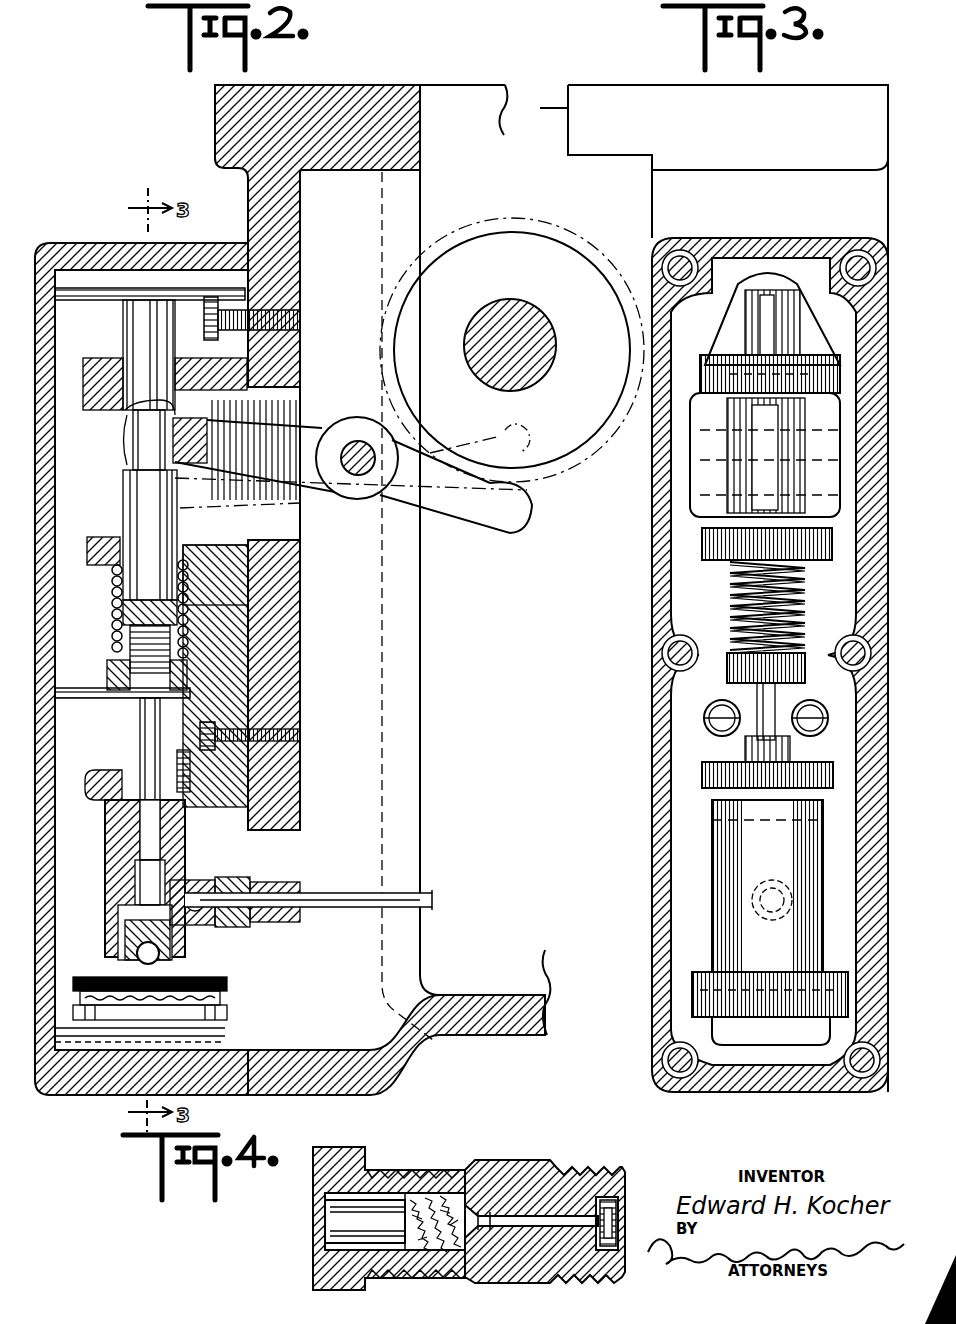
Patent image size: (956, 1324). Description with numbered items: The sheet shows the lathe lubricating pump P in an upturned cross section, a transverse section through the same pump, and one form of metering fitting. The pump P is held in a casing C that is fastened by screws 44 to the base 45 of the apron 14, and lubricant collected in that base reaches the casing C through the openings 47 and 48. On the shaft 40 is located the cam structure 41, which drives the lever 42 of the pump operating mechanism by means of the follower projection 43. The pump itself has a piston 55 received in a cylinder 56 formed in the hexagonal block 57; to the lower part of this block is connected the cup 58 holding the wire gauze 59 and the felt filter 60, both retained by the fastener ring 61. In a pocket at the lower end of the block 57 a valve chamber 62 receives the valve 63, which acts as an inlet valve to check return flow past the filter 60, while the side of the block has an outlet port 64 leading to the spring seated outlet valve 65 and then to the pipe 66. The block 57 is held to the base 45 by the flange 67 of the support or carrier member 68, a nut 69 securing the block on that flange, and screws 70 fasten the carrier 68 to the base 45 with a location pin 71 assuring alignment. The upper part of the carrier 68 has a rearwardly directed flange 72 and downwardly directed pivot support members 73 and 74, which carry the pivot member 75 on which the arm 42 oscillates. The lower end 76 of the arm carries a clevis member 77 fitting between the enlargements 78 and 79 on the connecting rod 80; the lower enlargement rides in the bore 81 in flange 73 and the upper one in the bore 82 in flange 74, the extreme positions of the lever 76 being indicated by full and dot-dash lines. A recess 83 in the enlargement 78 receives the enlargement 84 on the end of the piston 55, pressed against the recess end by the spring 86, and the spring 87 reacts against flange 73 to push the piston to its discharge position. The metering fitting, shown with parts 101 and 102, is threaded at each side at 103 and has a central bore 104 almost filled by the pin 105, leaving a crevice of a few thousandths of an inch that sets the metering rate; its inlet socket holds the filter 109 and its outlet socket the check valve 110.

In FIG. 2, the apron 14 is at (362, 92).
In FIG. 3, the apron 14 is at (618, 96).
In FIG. 2, the shaft 40 is at (516, 318).
In FIG. 2, the cam structure 41 is at (560, 452).
In FIG. 2, the lever 42 is at (462, 508).
In FIG. 2, the follower projection 43 is at (516, 500).
In FIG. 2, the screws 44 is at (300, 318).
In FIG. 3, the screws 44 is at (688, 258).
In FIG. 2, the base of the apron structure 45 is at (288, 236).
In FIG. 3, the base of the apron structure 45 is at (660, 188).
In FIG. 2, the opening 47 is at (280, 985).
In FIG. 3, the opening 47 is at (748, 1050).
In FIG. 2, the opening 48 is at (300, 522).
In FIG. 3, the opening 48 is at (700, 498).
In FIG. 2, the piston 55 is at (145, 842).
In FIG. 2, the cylinder 56 is at (140, 812).
In FIG. 2, the hexagonal block 57 is at (112, 880).
In FIG. 3, the hexagonal block 57 is at (745, 944).
In FIG. 2, the cup 58 is at (195, 978).
In FIG. 2, the wire gauze 59 is at (205, 990).
In FIG. 2, the felt filter 60 is at (152, 1012).
In FIG. 2, the fastener ring 61 is at (90, 1012).
In FIG. 2, the valve chamber 62 is at (180, 920).
In FIG. 2, the valve 63 is at (118, 958).
In FIG. 2, the outlet port 64 is at (235, 878).
In FIG. 2, the spring seated outlet valve 65 is at (238, 890).
In FIG. 2, the pipe 66 is at (432, 892).
In FIG. 2, the flange 67 is at (100, 770).
In FIG. 2, the support or carrier member 68 is at (240, 606).
In FIG. 2, the nut 69 is at (184, 750).
In FIG. 2, the screws 70 is at (258, 706).
In FIG. 3, the screws 70 is at (712, 742).
In FIG. 2, the location pin 71 is at (302, 736).
In FIG. 2, the rearwardly directed flange 72 is at (302, 402).
In FIG. 2, the pivot support member 73 is at (104, 537).
In FIG. 3, the pivot support member 73 is at (708, 420).
In FIG. 2, the pivot support member 74 is at (125, 440).
In FIG. 3, the pivot support member 74 is at (832, 362).
In FIG. 2, the pivot member 75 is at (384, 480).
In FIG. 2, the lower end of the arm 76 is at (216, 458).
In FIG. 2, the clevis member 77 is at (212, 435).
In FIG. 2, the enlargement 78 is at (122, 612).
In FIG. 2, the enlargement 79 is at (132, 325).
In FIG. 2, the connecting rod 80 is at (130, 448).
In FIG. 2, the bore 81 is at (110, 578).
In FIG. 2, the bore 82 is at (108, 375).
In FIG. 2, the recess 83 is at (80, 694).
In FIG. 2, the enlargement 84 is at (128, 690).
In FIG. 2, the spring 86 is at (175, 622).
In FIG. 2, the spring 87 is at (125, 660).
In FIG. 4, the fitting 101 is at (518, 1163).
In FIG. 4, the fitting body 102 is at (440, 1172).
In FIG. 4, the threads 103 is at (586, 1165).
In FIG. 4, the central bore 104 is at (468, 1262).
In FIG. 4, the pin 105 is at (536, 1214).
In FIG. 4, the filter 109 is at (432, 1192).
In FIG. 4, the check valve 110 is at (626, 1212).
In FIG. 2, the casing C is at (92, 243).
In FIG. 3, the casing C is at (655, 555).
In FIG. 2, the pump P is at (178, 836).
In FIG. 3, the pump P is at (752, 852).